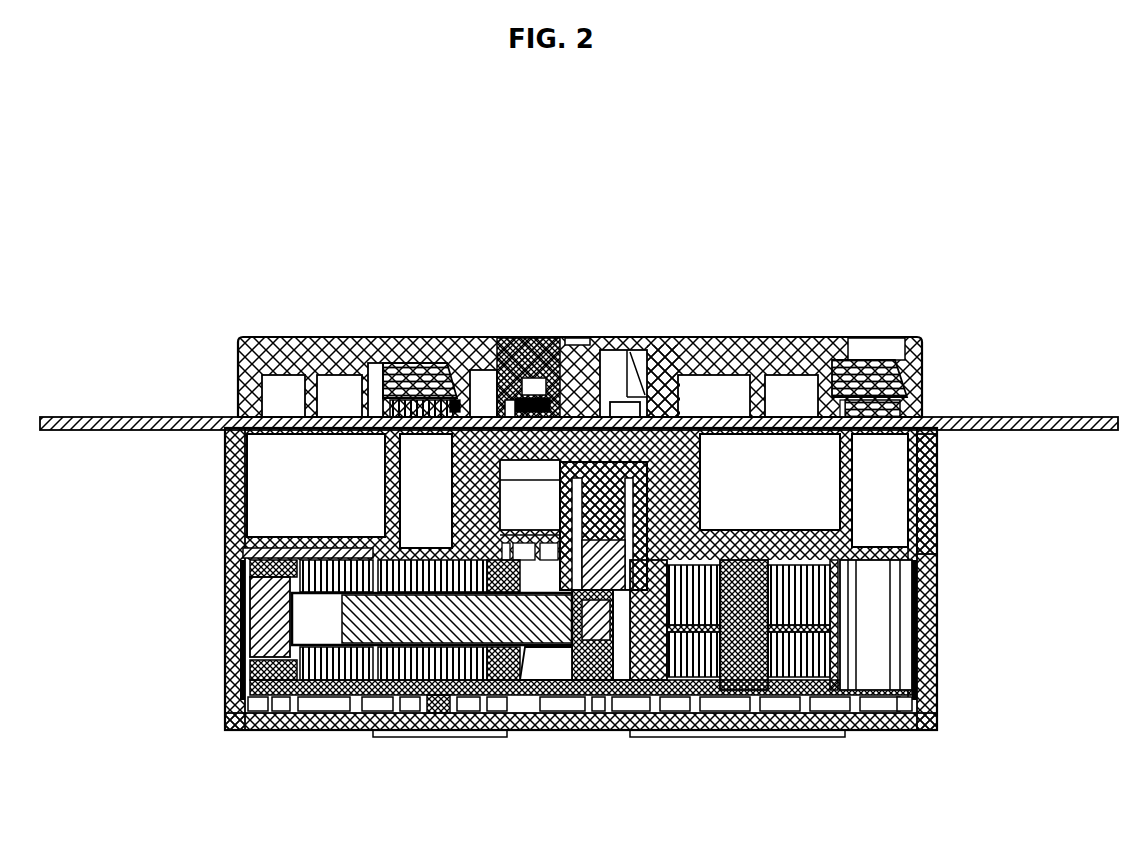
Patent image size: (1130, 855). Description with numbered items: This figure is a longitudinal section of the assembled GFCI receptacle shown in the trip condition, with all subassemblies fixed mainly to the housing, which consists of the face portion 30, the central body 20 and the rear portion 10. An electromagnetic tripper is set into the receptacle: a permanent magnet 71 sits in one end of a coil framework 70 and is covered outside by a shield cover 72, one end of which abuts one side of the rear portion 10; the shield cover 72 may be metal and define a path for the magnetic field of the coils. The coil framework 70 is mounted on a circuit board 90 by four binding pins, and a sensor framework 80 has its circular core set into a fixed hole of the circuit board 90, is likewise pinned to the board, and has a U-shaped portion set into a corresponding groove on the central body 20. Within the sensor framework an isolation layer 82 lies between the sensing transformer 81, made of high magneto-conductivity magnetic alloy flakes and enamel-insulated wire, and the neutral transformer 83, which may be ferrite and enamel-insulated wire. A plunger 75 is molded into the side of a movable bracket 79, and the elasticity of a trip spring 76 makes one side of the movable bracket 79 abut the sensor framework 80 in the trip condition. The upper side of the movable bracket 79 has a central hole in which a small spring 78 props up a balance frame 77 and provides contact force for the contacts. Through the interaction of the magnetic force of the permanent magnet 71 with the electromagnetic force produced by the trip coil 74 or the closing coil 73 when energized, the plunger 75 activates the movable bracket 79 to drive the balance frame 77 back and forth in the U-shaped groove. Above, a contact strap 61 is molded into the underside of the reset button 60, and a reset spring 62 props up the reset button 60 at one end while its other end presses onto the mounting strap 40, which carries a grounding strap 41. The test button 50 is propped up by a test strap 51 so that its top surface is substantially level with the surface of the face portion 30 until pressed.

The rear portion 10 is at (937, 653).
The central body 20 is at (935, 518).
The face portion 30 is at (922, 345).
The mounting strap 40 is at (953, 430).
The grounding strap 41 is at (922, 397).
The test button 50 is at (610, 338).
The test strap 51 is at (657, 338).
The reset button 60 is at (553, 338).
The contact strap 61 is at (527, 338).
The reset spring 62 is at (488, 338).
The coil framework 70 is at (225, 550).
The permanent magnet 71 is at (225, 585).
The shield cover 72 is at (225, 637).
The closing coil 73 is at (225, 683).
The trip coil 74 is at (380, 697).
The plunger 75 is at (445, 660).
The trip spring 76 is at (520, 650).
The balance frame 77 is at (558, 510).
The small spring 78 is at (580, 690).
The movable bracket 79 is at (623, 700).
The sensor framework 80 is at (668, 700).
The sensing transformer 81 is at (722, 690).
The isolation layer 82 is at (800, 690).
The neutral transformer 83 is at (880, 697).
The circuit board 90 is at (930, 707).